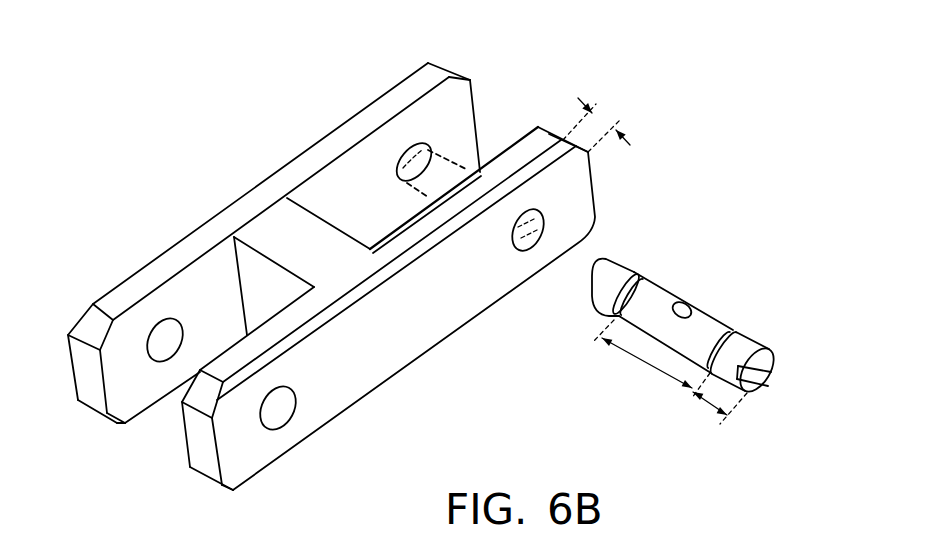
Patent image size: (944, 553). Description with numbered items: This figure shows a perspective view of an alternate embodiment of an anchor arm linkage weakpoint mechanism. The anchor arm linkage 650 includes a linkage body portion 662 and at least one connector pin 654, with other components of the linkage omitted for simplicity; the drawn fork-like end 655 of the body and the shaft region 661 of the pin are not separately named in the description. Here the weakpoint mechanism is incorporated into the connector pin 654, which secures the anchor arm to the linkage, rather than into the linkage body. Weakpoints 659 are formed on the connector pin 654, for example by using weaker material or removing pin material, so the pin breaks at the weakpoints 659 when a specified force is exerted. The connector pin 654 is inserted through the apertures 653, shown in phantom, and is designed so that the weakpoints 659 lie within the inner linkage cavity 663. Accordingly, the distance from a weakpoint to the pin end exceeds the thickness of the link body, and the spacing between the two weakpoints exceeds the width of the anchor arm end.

The anchor arm linkage 650 is at (233, 73).
The first tine 655 is at (88, 327).
The linkage body portion 662 is at (267, 232).
The inner linkage cavity 663 is at (372, 163).
The apertures 653 is at (531, 212).
The connector pin 654 is at (767, 332).
The weakpoints 659 is at (672, 322).
The shaft 661 is at (732, 328).